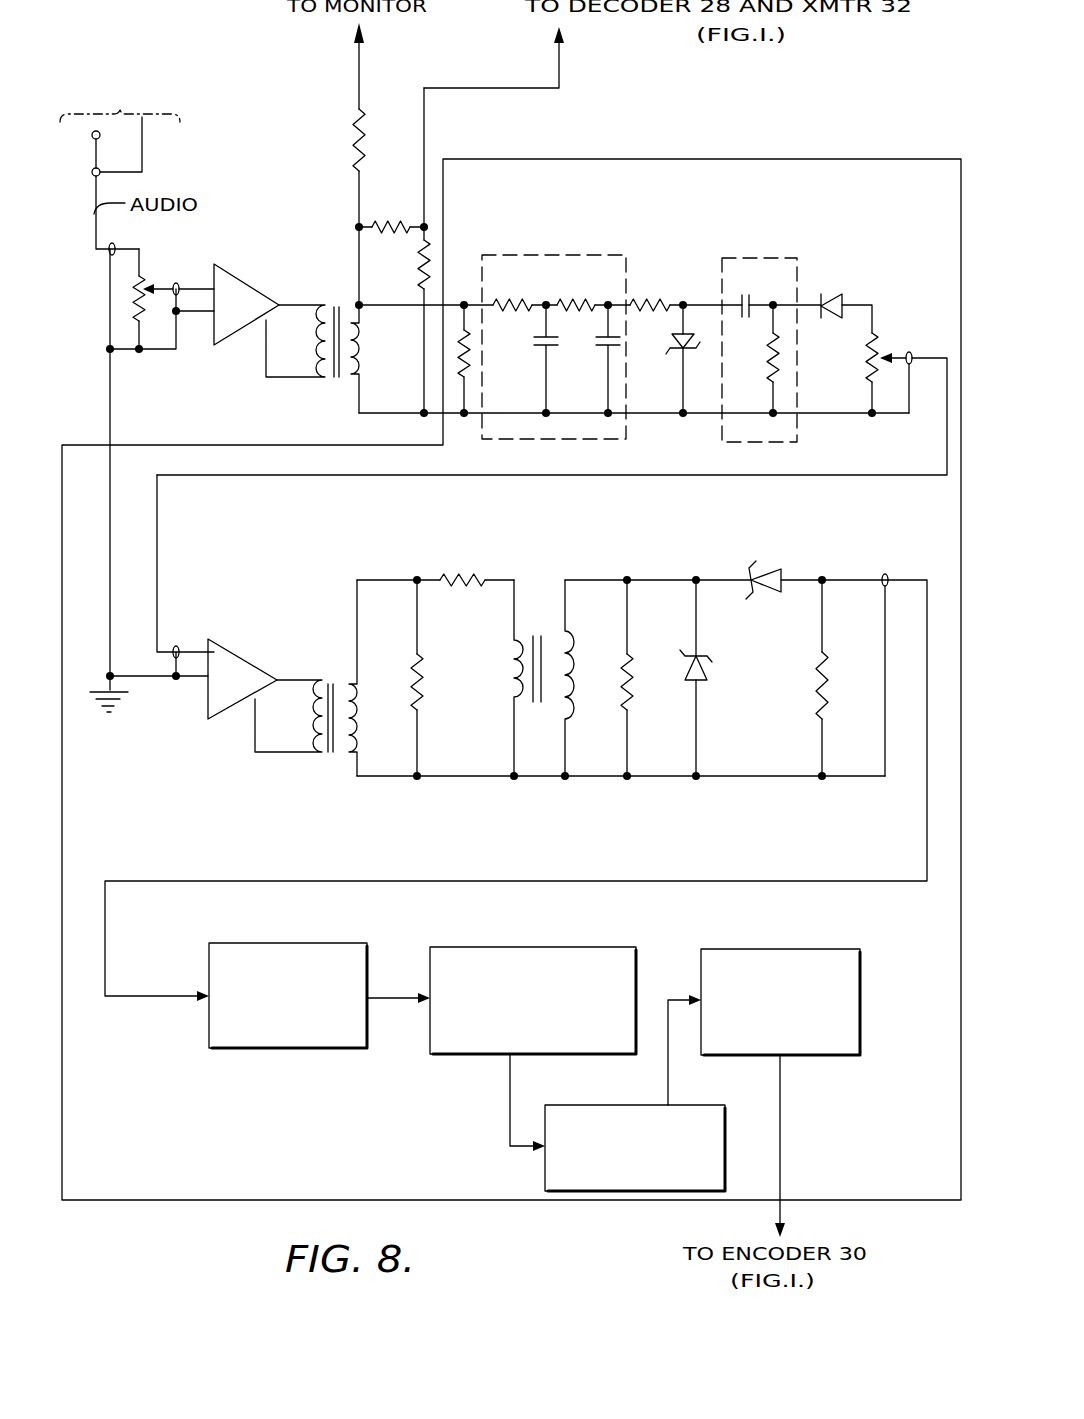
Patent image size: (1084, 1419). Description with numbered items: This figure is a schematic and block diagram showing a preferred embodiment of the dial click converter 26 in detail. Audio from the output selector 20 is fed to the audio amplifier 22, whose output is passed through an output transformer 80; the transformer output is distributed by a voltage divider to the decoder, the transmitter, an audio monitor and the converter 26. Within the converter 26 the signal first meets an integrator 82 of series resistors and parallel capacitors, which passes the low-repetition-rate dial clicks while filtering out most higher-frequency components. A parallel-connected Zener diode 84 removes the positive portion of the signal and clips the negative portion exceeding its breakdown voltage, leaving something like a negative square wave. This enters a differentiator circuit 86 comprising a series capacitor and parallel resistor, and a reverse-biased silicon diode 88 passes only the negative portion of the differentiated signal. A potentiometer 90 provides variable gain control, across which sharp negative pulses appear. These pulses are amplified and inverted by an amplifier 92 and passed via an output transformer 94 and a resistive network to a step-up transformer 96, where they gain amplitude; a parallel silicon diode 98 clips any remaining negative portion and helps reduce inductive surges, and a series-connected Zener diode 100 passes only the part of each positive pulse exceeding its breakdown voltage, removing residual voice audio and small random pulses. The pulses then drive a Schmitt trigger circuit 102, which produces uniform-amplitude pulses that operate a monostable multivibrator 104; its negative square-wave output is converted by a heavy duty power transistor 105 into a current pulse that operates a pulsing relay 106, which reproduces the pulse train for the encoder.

The output selector 20 is at (183, 151).
The audio amplifier 22 is at (270, 250).
The dial click converter 26 is at (544, 159).
The output transformer 80 is at (345, 297).
The integrator 82 is at (634, 216).
The Zener diode 84 is at (677, 355).
The differentiator circuit 86 is at (753, 258).
The silicon diode 88 is at (843, 300).
The potentiometer 90 is at (900, 345).
The amplifier 92 is at (240, 666).
The output transformer 94 is at (341, 674).
The step-up transformer 96 is at (539, 588).
The silicon diode 98 is at (702, 669).
The Zener diode 100 is at (777, 573).
The Schmitt trigger circuit 102 is at (275, 943).
The monostable multivibrator 104 is at (524, 947).
The heavy duty power transistor 105 is at (545, 1170).
The pulsing relay 106 is at (783, 949).